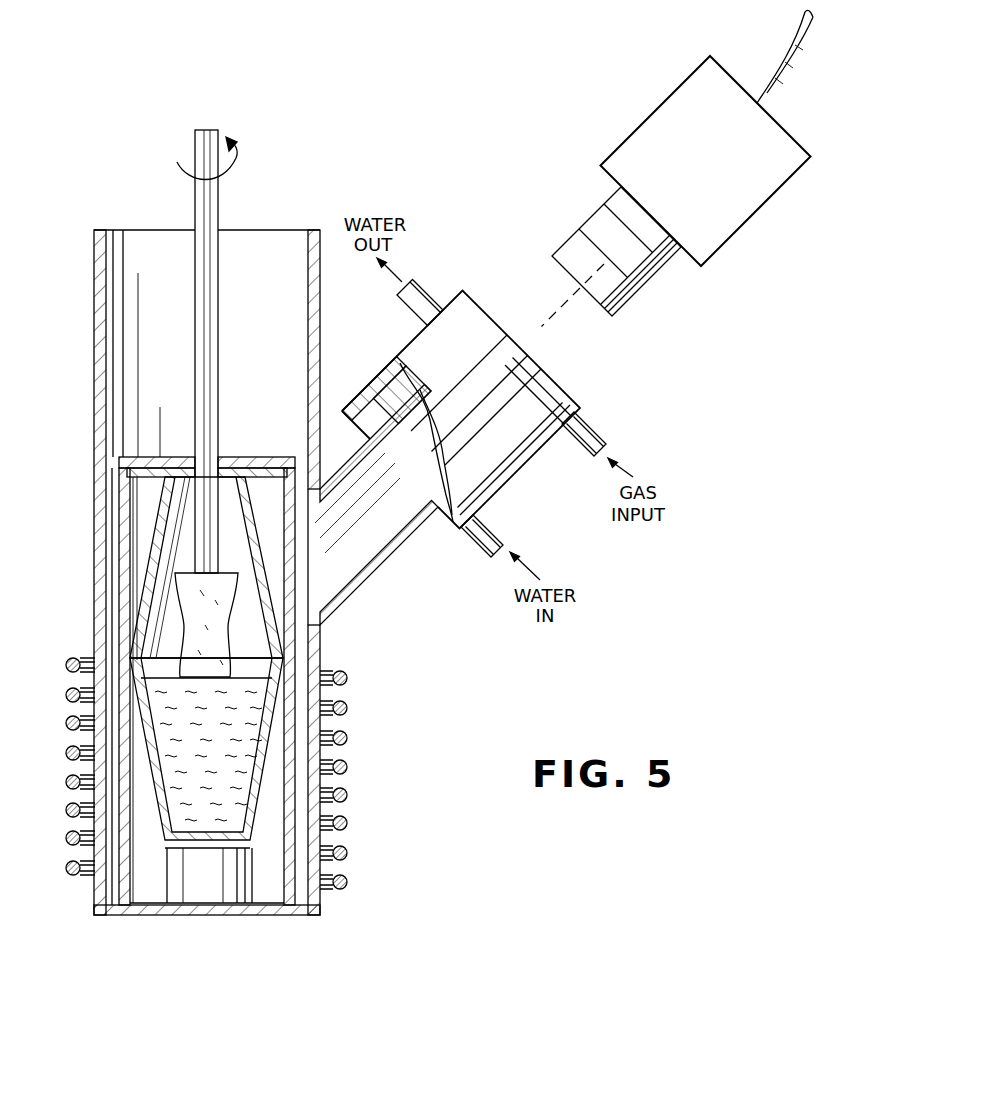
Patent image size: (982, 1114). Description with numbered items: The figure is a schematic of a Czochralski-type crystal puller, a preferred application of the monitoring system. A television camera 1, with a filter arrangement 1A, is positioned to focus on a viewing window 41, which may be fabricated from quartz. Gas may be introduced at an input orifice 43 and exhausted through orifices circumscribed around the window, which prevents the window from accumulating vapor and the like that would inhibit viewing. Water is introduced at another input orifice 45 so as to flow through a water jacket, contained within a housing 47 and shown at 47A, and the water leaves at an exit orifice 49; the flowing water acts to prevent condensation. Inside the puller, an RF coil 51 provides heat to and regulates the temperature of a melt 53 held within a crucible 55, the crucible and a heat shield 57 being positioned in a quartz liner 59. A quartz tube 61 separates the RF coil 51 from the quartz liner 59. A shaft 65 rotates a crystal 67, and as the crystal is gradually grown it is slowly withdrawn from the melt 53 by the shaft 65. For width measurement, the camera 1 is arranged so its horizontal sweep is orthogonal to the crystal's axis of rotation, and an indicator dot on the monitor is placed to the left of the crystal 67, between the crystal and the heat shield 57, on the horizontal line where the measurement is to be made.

The television camera 1 is at (630, 135).
The filter arrangement 1A is at (652, 305).
The viewing window 41 is at (493, 318).
The input orifice 43 is at (590, 430).
The input orifice 45 is at (496, 532).
The housing 47 is at (400, 352).
The water jacket 47A is at (440, 475).
The exit orifice 49 is at (428, 292).
The RF coil 51 is at (67, 809).
The melt 53 is at (197, 828).
The crucible 55 is at (262, 813).
The heat shield 57 is at (163, 495).
The liner 59 is at (125, 552).
The quartz tube 61 is at (95, 302).
The shaft 65 is at (198, 190).
The crystal 67 is at (190, 620).